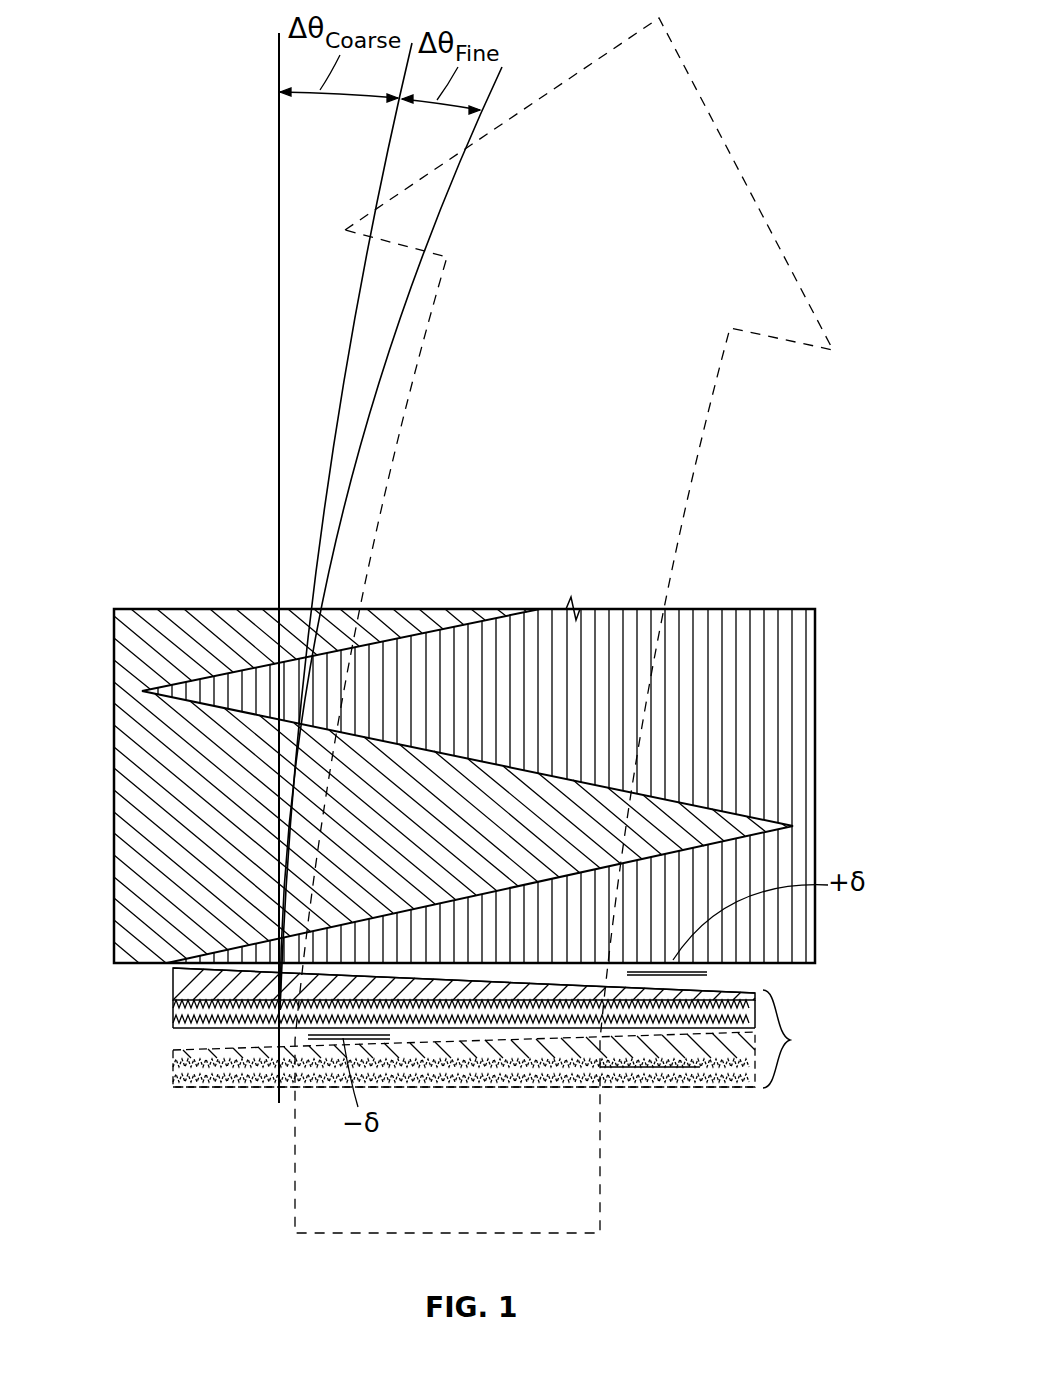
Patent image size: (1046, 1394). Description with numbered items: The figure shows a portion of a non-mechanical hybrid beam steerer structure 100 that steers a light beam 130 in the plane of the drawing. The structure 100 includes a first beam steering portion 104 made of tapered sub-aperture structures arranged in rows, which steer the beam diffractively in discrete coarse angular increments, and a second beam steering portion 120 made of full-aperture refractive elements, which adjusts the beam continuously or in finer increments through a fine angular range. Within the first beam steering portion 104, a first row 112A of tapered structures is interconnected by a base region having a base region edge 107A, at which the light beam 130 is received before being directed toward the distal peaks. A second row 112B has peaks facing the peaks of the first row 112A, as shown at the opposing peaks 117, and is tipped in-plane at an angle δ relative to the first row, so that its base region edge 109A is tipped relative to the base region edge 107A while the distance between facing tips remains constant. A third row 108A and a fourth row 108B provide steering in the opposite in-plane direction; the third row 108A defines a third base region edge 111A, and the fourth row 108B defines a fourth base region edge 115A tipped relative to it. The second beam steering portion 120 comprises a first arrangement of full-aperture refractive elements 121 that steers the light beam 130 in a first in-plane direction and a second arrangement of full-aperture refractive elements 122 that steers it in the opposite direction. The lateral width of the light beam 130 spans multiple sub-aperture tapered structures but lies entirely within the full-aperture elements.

The hybrid beam steerer structure 100 is at (781, 29).
The light beam 130 is at (745, 182).
The second beam steering portion 120 is at (114, 667).
The first arrangement of full-aperture refractive elements 121 is at (120, 763).
The second arrangement of full-aperture refractive elements 122 is at (808, 728).
The fourth row 108B is at (173, 1000).
The third row 108A is at (173, 1023).
The third base region edge 111A is at (200, 1029).
The base region edge of the second row 109A is at (177, 1048).
The second row 112B is at (173, 1060).
The first row 112A is at (173, 1083).
The base region edge 107A is at (267, 1087).
The first beam steering portion 104 is at (804, 1039).
The fourth base region edge 115A is at (712, 993).
The opposing peaks 117 is at (638, 1068).